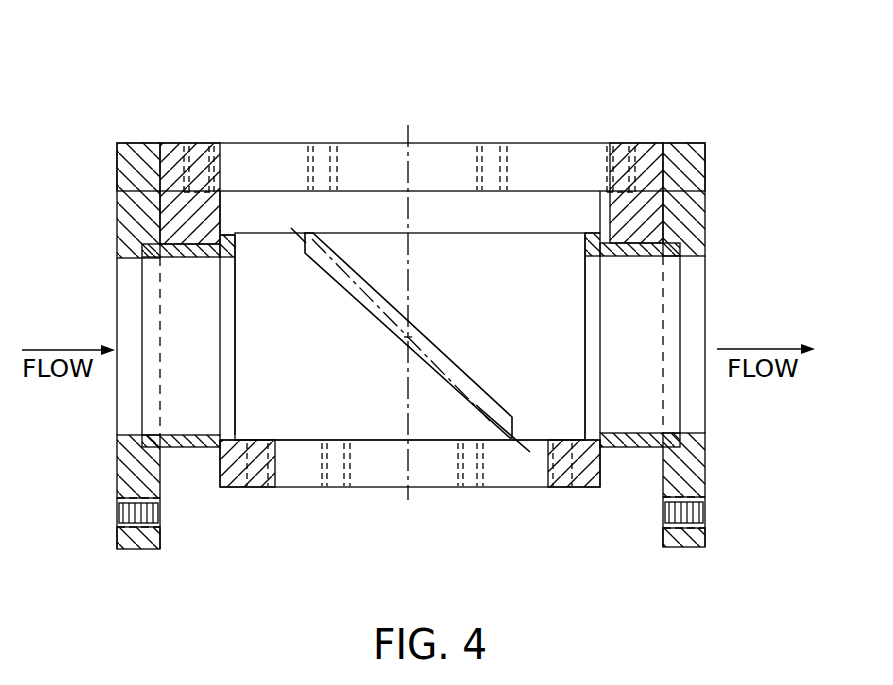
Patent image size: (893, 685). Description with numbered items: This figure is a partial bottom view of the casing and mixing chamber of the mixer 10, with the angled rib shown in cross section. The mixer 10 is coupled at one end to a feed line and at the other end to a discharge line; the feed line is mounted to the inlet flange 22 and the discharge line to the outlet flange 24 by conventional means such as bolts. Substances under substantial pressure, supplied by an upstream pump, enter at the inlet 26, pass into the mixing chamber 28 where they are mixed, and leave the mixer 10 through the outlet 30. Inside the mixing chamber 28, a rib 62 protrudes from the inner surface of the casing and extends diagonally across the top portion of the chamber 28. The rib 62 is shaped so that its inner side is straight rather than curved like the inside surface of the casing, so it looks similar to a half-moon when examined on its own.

The mixer 10 is at (660, 106).
The inlet flange 22 is at (134, 481).
The outlet flange 24 is at (698, 481).
The inlet 26 is at (190, 328).
The mixing chamber 28 is at (377, 385).
The outlet 30 is at (658, 323).
The rib 62 is at (488, 420).